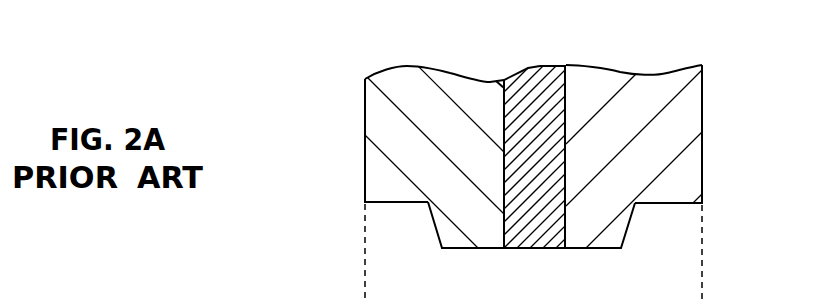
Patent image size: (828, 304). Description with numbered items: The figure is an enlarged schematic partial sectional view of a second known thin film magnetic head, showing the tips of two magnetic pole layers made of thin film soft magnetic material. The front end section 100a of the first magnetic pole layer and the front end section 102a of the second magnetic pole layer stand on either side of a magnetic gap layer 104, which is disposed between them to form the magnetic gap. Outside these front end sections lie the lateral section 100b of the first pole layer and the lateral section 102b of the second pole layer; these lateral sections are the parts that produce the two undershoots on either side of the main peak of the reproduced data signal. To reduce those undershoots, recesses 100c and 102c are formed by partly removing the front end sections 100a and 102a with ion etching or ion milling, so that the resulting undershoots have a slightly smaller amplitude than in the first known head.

The front end section of the first magnetic pole layer 100a is at (377, 112).
The lateral section of the first magnetic pole layer 100b is at (367, 181).
The recess 100c is at (431, 220).
The front end section of the second magnetic pole layer 102a is at (690, 107).
The lateral section of the second magnetic pole layer 102b is at (692, 180).
The recess 102c is at (633, 218).
The magnetic gap layer 104 is at (540, 66).